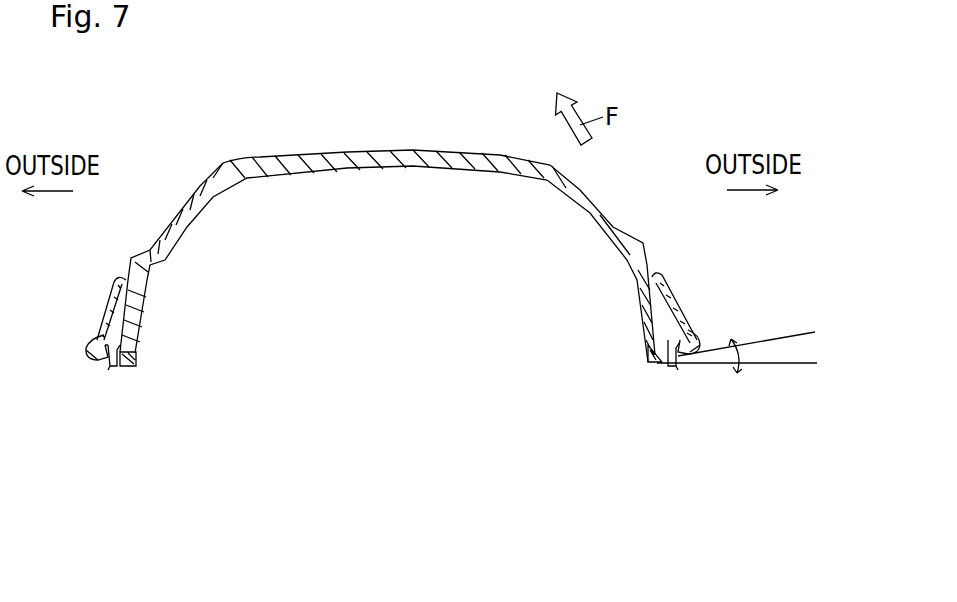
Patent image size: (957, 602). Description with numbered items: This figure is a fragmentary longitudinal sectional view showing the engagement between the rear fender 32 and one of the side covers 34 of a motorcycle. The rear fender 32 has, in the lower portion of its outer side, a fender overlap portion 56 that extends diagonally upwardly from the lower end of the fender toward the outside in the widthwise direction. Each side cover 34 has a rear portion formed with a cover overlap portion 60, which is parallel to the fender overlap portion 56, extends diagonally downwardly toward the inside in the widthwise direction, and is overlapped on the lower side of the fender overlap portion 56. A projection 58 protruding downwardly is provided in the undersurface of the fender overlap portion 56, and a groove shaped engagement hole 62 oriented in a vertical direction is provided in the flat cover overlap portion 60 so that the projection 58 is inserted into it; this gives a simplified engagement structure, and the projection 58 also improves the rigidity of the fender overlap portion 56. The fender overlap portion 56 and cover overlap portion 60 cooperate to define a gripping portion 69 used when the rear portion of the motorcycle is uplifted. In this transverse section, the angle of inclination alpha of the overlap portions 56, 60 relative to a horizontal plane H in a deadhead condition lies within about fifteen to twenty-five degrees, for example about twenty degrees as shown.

The rear fender 32 is at (412, 150).
The side cover 34 is at (117, 288).
The fender overlap portion 56 is at (102, 335).
The projection 58 is at (117, 364).
The cover overlap portion 60 is at (97, 354).
The engagement hole 62 is at (110, 364).
The gripping portion 69 is at (146, 380).
The horizontal plane H is at (790, 363).
The angle of inclination alpha is at (735, 347).